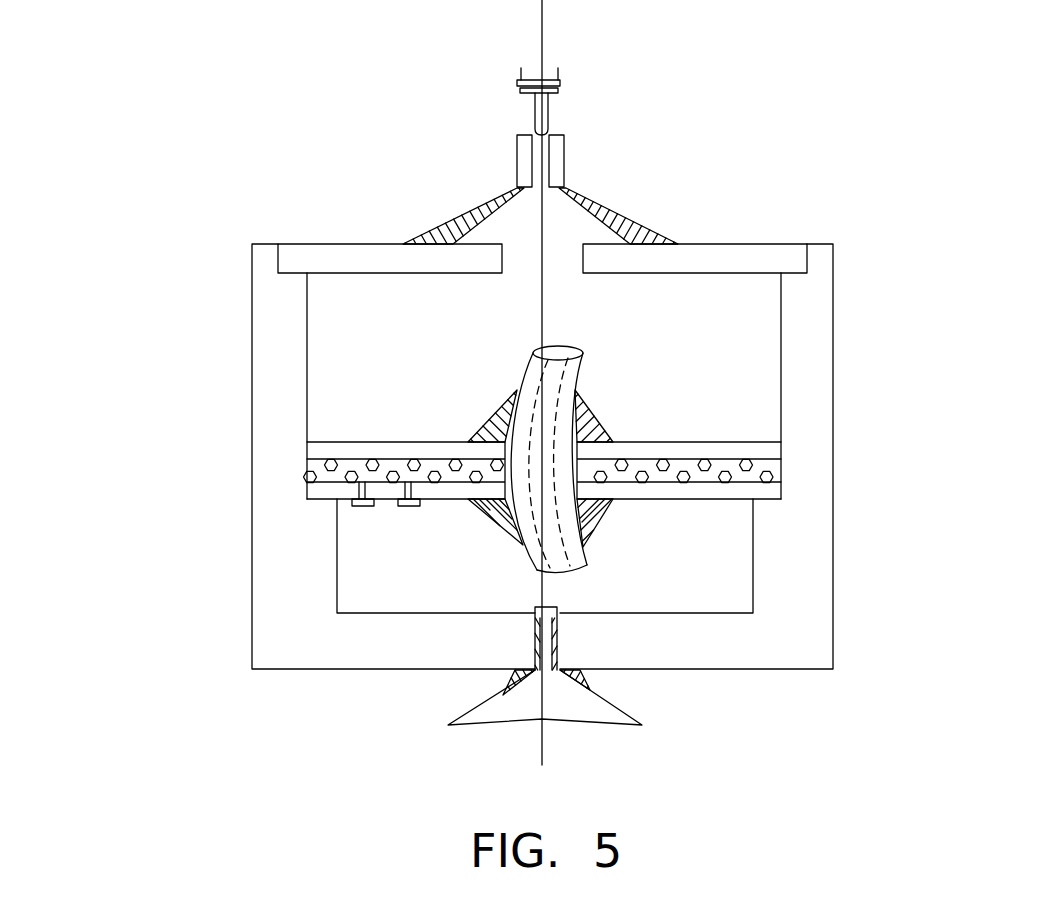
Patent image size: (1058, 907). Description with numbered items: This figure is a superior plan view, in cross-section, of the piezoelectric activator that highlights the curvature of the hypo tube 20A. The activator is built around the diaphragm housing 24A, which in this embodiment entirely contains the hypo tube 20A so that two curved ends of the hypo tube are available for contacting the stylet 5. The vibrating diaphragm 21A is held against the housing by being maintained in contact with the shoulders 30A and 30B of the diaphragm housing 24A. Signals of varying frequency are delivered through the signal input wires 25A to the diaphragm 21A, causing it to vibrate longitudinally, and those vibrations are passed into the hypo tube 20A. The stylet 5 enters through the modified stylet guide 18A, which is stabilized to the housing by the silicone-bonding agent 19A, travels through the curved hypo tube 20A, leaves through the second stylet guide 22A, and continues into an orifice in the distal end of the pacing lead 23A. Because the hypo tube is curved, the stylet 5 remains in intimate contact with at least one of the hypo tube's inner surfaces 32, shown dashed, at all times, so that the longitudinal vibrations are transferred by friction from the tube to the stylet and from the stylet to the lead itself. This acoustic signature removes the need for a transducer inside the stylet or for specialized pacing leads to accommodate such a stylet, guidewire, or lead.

The stylet 5 is at (545, 748).
The modified stylet guide 18A is at (452, 725).
The silicone-bonding agent 19A is at (610, 207).
The curved hypo tube 20A is at (575, 387).
The vibrating diaphragm 21A is at (357, 440).
The second stylet guide 22A is at (515, 177).
The pacing lead 23A is at (562, 80).
The diaphragm housing 24A is at (815, 470).
The signal input wires 25A is at (408, 507).
The shoulder 30A is at (335, 500).
The shoulder 30B is at (765, 502).
The inner surfaces of the hypo tube 32 is at (550, 555).